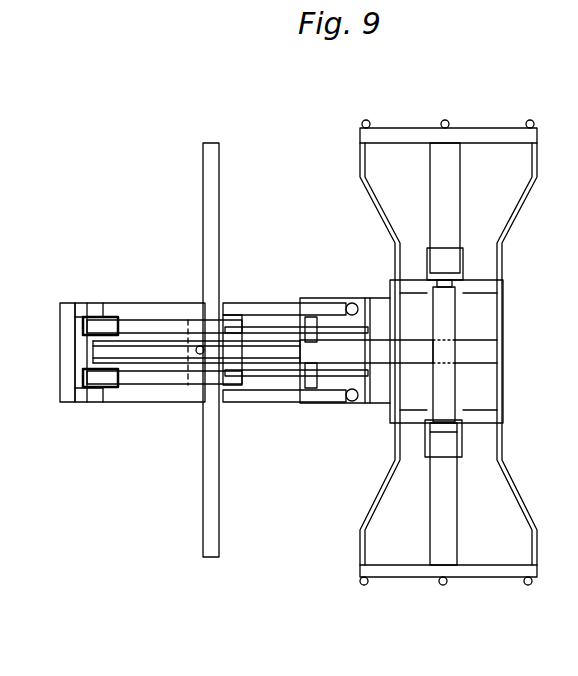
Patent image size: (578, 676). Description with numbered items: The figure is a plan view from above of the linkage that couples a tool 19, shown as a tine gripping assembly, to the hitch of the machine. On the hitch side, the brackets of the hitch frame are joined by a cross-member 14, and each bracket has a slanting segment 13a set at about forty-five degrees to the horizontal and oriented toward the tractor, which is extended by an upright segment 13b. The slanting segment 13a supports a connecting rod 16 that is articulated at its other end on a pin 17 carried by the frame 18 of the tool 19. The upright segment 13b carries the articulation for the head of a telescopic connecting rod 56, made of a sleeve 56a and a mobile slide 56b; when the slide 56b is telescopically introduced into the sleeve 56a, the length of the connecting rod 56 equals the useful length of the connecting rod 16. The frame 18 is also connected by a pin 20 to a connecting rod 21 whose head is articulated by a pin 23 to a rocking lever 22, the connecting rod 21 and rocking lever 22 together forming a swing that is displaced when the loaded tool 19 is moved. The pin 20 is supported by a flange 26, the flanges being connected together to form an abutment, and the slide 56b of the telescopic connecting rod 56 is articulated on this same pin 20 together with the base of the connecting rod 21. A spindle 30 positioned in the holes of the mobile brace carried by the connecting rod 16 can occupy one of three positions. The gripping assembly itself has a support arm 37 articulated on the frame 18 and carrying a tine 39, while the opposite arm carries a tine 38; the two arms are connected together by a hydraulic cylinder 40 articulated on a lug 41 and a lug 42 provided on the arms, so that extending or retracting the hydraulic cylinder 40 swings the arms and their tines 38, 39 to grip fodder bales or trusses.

The slanting segment 13a is at (163, 325).
The upright segment 13b is at (90, 320).
The cross-member 14 is at (68, 378).
The connecting rod 16 is at (83, 306).
The pin 17 is at (298, 404).
The frame 18 is at (390, 407).
The tool 19 is at (383, 472).
The pin 20 is at (362, 300).
The connecting rod 21 is at (266, 340).
The rocking lever 22 is at (125, 345).
The pin 23 is at (241, 333).
The flange 26 is at (400, 347).
The spindle 30 is at (378, 508).
The support arm 37 is at (363, 183).
The tine 38 is at (440, 585).
The tine 39 is at (530, 125).
The hydraulic cylinder 40 is at (449, 317).
The lug 41 is at (443, 503).
The lug 42 is at (448, 232).
The telescopic connecting rod 56 is at (198, 403).
The sleeve 56a is at (247, 302).
The mobile slide 56b is at (347, 298).